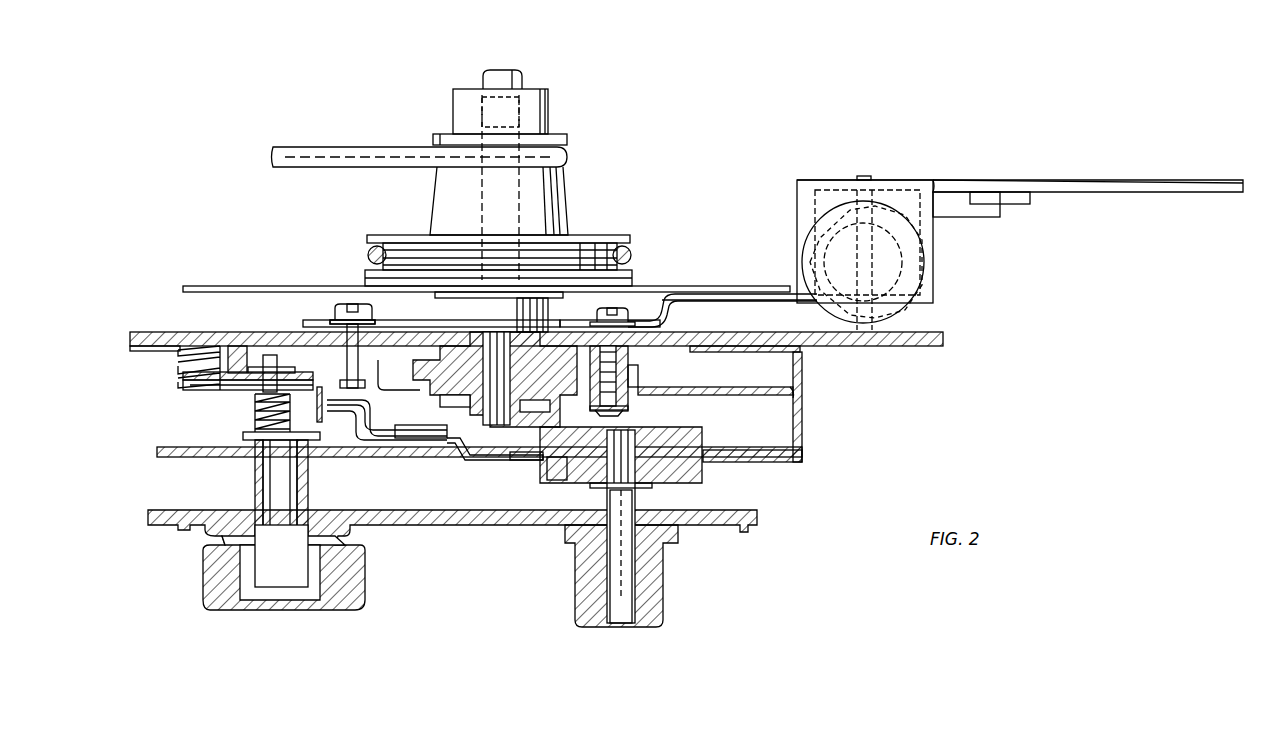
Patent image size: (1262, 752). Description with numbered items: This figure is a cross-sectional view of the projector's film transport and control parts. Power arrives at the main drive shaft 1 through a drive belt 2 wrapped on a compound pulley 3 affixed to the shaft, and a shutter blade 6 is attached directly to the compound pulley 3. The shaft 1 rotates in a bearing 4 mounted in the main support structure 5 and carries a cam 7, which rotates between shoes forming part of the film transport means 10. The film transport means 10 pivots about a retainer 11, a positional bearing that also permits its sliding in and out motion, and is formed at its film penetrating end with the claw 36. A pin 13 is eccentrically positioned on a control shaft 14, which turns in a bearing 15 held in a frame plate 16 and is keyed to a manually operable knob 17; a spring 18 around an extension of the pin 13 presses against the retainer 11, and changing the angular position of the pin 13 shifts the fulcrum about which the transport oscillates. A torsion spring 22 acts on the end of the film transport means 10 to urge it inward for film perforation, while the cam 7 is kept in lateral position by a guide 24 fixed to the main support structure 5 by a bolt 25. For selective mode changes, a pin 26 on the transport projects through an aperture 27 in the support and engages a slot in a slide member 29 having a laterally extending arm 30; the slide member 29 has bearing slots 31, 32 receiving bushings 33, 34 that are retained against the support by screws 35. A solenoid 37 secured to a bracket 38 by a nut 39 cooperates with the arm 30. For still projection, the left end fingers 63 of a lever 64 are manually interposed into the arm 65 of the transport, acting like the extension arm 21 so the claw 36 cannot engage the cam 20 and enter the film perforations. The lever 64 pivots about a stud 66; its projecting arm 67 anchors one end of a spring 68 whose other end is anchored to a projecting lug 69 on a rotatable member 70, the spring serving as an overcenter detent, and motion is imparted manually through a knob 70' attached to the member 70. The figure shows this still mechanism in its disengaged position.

The main drive shaft 1 is at (505, 72).
The drive belt 2 is at (378, 236).
The compound pulley 3 is at (560, 214).
The bearing 4 is at (548, 314).
The main support structure 5 is at (150, 332).
The shutter blade 6 is at (222, 285).
The cam 7 is at (580, 375).
The film transport means 10 is at (718, 392).
The retainer 11 is at (250, 390).
The pin 13 is at (268, 355).
The control shaft 14 is at (268, 480).
The bearing 15 is at (310, 490).
The frame plate 16 is at (185, 457).
The manually operable knob 17 is at (350, 582).
The spring 18 is at (254, 425).
The cam 20 is at (460, 350).
The extension arm 21 is at (400, 368).
The torsion spring 22 is at (177, 370).
The guide 24 is at (638, 375).
The bolt 25 is at (626, 404).
The pin 26 is at (350, 356).
The aperture 27 is at (400, 318).
The slide member 29 is at (660, 328).
The laterally extending arm 30 is at (815, 214).
The bearing slot 31 is at (338, 306).
The bearing slot 32 is at (668, 258).
The bushing 33 is at (330, 320).
The bushing 34 is at (665, 300).
The screw 35 is at (335, 304).
The claw 36 is at (803, 402).
The solenoid 37 is at (878, 220).
The bracket 38 is at (960, 182).
The nut 39 is at (928, 285).
The fingers 63 is at (372, 420).
The lever 64 is at (460, 452).
The arm 65 is at (318, 400).
The stud 66 is at (420, 440).
The projecting arm 67 is at (490, 462).
The spring 68 is at (525, 462).
The projecting lug 69 is at (553, 480).
The rotatable member 70 is at (641, 518).
The knob 70' is at (638, 576).